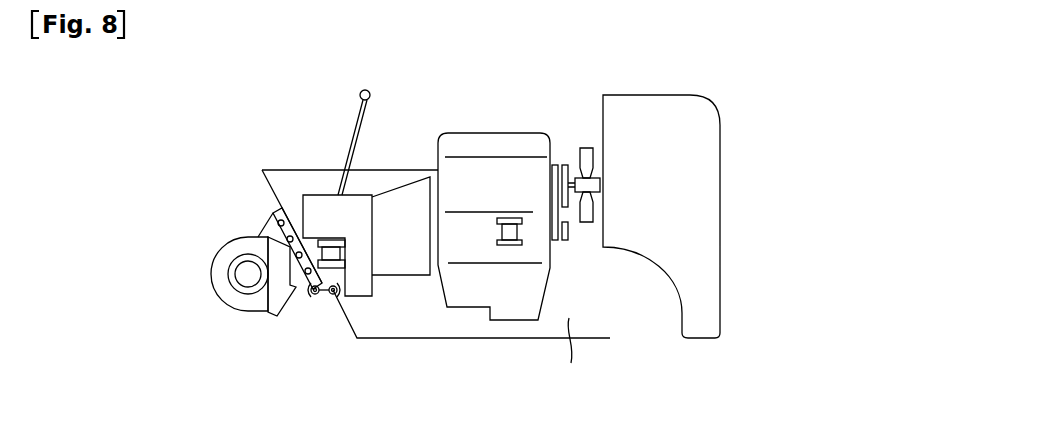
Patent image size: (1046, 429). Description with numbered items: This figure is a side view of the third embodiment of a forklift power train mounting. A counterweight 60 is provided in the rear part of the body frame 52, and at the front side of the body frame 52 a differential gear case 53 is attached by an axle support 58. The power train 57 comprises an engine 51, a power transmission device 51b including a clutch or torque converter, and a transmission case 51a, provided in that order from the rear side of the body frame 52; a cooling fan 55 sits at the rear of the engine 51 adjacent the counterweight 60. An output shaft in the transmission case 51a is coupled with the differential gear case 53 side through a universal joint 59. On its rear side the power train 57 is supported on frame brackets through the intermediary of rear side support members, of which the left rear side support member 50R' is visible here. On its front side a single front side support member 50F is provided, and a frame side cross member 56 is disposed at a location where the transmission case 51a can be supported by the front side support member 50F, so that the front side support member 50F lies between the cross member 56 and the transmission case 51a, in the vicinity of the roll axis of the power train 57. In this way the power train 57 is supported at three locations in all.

The engine 51 is at (464, 150).
The transmission case 51a is at (313, 222).
The power transmission device 51b is at (392, 210).
The front side support member 50F is at (345, 255).
The rear side support member (left) 50R' is at (520, 170).
The body frame 52 is at (570, 356).
The differential gear case 53 is at (275, 252).
The cooling fan 55 is at (576, 147).
The cross member 56 is at (338, 294).
The power train 57 is at (465, 320).
The axle support 58 is at (301, 212).
The universal joint 59 is at (316, 300).
The counterweight 60 is at (690, 125).